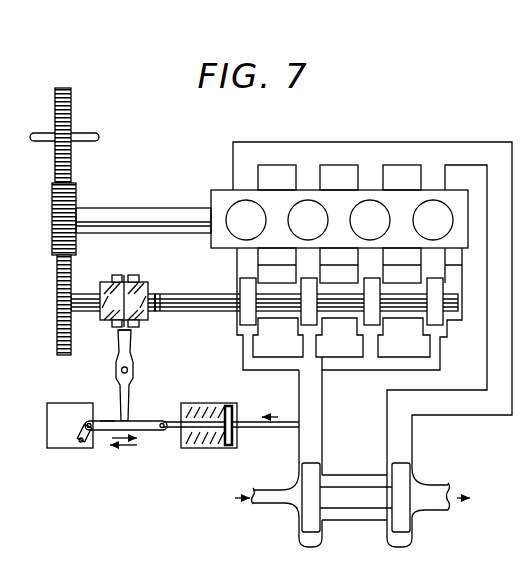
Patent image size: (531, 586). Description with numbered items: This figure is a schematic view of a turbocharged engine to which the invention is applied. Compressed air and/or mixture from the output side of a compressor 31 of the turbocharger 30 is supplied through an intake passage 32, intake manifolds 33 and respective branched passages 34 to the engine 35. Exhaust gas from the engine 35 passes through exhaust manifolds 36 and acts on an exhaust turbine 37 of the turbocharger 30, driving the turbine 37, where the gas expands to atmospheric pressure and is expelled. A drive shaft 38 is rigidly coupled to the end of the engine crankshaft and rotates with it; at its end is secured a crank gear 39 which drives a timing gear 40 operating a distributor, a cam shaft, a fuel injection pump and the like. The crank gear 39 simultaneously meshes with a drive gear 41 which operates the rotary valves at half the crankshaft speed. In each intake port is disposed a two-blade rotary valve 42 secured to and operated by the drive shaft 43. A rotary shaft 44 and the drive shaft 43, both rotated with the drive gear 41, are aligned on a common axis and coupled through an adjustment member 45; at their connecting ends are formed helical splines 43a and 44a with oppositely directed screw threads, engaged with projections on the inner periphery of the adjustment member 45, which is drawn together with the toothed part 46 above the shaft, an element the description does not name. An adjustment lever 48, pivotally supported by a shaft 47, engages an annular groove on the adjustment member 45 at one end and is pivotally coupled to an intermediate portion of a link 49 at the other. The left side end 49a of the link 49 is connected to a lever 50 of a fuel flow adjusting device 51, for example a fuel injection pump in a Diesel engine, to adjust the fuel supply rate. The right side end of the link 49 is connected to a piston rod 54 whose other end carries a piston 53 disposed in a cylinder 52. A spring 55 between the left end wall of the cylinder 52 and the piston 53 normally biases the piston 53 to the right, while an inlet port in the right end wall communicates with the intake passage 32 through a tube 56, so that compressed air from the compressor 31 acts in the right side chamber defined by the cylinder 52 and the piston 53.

The turbocharger 30 is at (361, 523).
The compressor 31 is at (307, 510).
The intake passage 32 is at (317, 408).
The intake manifolds 33 is at (328, 362).
The branched passages 34 is at (256, 348).
The engine 35 is at (341, 195).
The exhaust manifolds 36 is at (408, 157).
The exhaust turbine 37 is at (408, 505).
The drive shaft 38 is at (160, 227).
The crank gear 39 is at (67, 202).
The timing gear 40 is at (73, 112).
The drive gear 41 is at (58, 324).
The rotary valve 42 is at (246, 319).
The drive shaft 43 is at (197, 307).
The helical spline 43a is at (159, 309).
The rotary shaft 44 is at (81, 297).
The helical spline 44a is at (95, 313).
The adjustment member 45 is at (139, 290).
The clutch gear teeth 46 is at (123, 276).
The shaft 47 is at (121, 370).
The adjustment lever 48 is at (131, 355).
The link 49 is at (152, 421).
The left side end 49a is at (109, 421).
The lever 50 is at (84, 442).
The fuel flow adjusting device 51 is at (60, 410).
The cylinder 52 is at (212, 403).
The piston 53 is at (232, 410).
The piston rod 54 is at (170, 430).
The spring 55 is at (211, 446).
The tube 56 is at (250, 428).